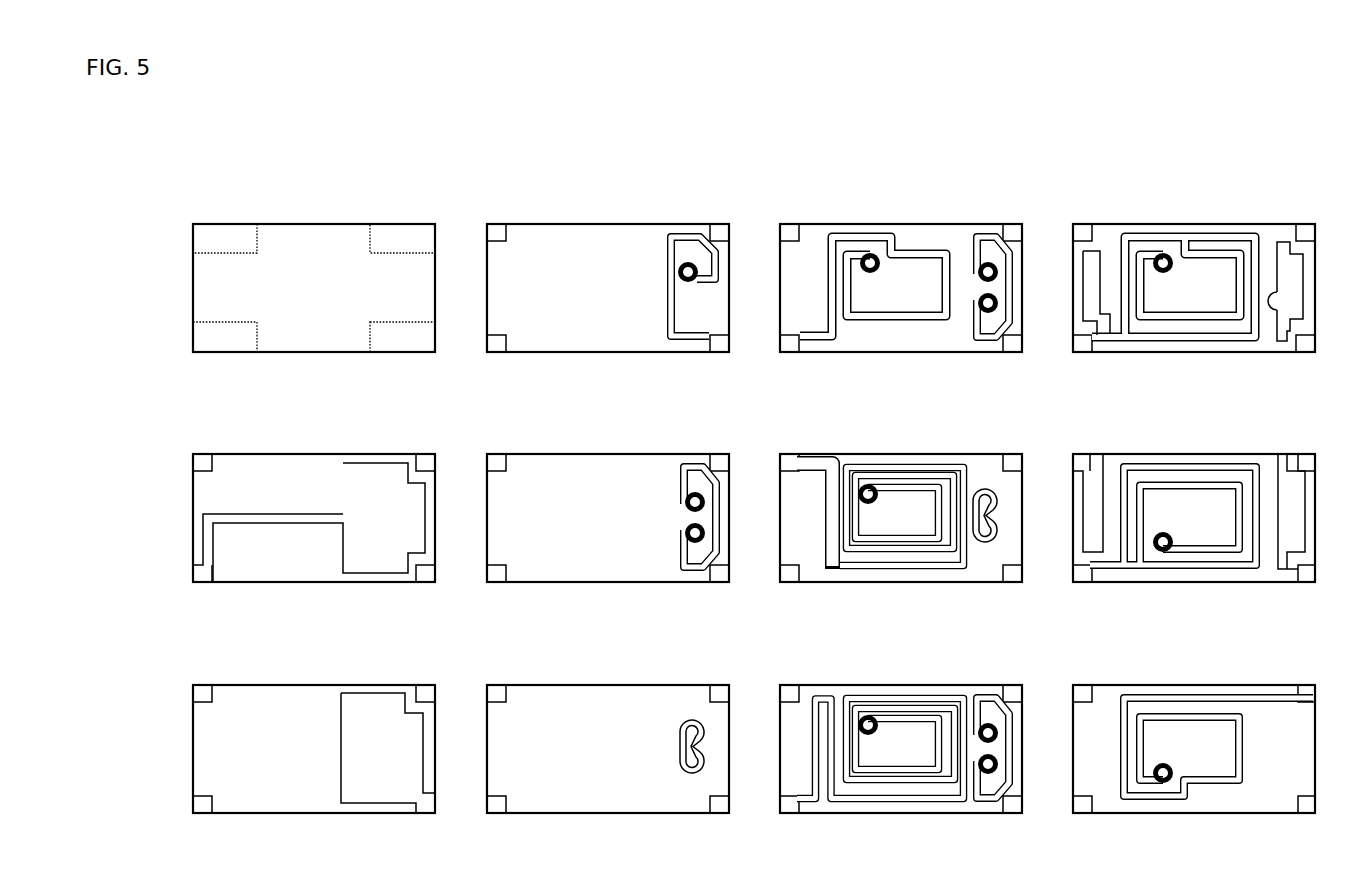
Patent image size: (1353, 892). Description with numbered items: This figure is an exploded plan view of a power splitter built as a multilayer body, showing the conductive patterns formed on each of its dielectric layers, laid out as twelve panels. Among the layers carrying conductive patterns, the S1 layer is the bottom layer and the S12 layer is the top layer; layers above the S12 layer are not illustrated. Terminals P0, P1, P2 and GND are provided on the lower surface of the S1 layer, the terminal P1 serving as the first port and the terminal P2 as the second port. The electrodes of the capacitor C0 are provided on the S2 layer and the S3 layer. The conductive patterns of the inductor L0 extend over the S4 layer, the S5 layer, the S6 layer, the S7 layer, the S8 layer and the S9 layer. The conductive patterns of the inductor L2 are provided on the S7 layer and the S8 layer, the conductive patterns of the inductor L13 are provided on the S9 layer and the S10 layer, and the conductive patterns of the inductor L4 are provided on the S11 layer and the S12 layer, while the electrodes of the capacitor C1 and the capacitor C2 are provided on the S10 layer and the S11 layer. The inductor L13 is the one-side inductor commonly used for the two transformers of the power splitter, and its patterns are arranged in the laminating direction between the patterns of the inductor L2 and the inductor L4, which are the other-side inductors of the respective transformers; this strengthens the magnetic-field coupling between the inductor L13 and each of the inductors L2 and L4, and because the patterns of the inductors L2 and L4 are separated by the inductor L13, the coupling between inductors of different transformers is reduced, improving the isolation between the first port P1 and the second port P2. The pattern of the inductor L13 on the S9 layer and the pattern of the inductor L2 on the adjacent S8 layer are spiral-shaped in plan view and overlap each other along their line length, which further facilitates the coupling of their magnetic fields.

The S1 layer S1 is at (298, 274).
The S2 layer S2 is at (298, 504).
The S3 layer S3 is at (298, 735).
The S4 layer S4 is at (593, 274).
The S5 layer S5 is at (593, 504).
The S6 layer S6 is at (593, 735).
The S7 layer S7 is at (885, 274).
The S8 layer S8 is at (885, 504).
The S9 layer S9 is at (885, 735).
The S10 layer S10 is at (1175, 274).
The S11 layer S11 is at (1175, 504).
The S12 layer S12 is at (1175, 735).
The terminal P0 is at (402, 337).
The first port P1 is at (225, 238).
The second port P2 is at (402, 238).
The ground terminal GND is at (225, 337).
The capacitor C0 is at (314, 638).
The inductor L0 is at (977, 697).
The inductor L2 is at (880, 403).
The inductor L13 is at (1026, 518).
The inductor L4 is at (1201, 631).
The capacitor C1 is at (1092, 263).
The capacitor C2 is at (1285, 265).